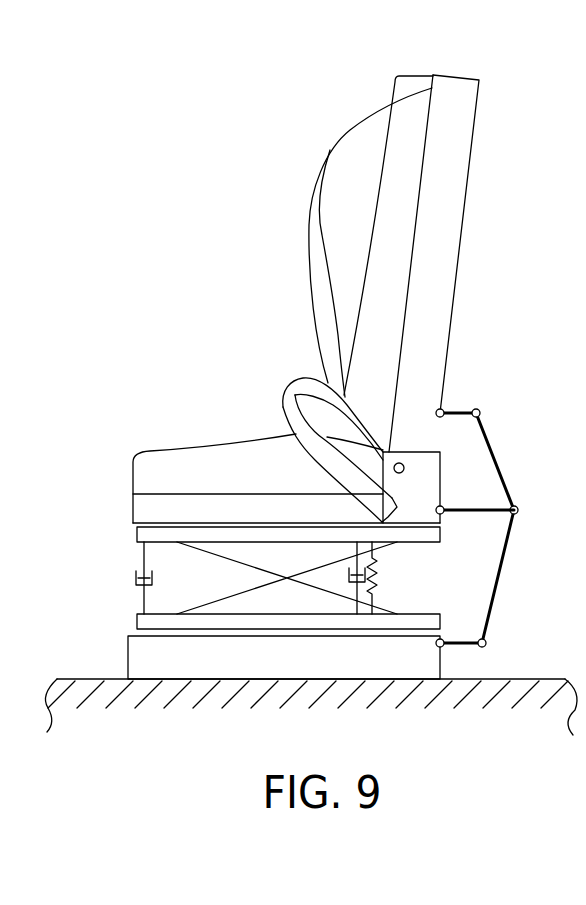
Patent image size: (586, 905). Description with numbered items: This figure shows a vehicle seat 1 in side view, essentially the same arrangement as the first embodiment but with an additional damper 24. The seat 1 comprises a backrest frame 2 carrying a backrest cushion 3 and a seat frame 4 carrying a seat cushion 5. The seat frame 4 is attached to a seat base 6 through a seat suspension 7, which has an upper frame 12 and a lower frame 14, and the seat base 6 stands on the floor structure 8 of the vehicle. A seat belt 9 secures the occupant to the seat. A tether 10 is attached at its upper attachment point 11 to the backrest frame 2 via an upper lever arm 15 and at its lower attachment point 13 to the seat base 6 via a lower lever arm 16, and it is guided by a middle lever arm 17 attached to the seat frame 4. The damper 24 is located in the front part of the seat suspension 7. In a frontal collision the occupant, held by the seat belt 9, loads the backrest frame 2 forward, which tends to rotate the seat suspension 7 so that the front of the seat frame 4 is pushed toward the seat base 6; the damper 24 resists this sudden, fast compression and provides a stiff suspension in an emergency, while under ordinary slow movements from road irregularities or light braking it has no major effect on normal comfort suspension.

The seat 1 is at (222, 325).
The backrest frame 2 is at (440, 256).
The backrest cushion 3 is at (405, 148).
The seat frame 4 is at (138, 510).
The seat cushion 5 is at (210, 462).
The seat base 6 is at (427, 662).
The seat suspension 7 is at (116, 598).
The floor structure 8 is at (293, 736).
The seat belt 9 is at (317, 260).
The tether 10 is at (503, 555).
The upper attachment point 11 is at (480, 410).
The upper frame 12 is at (140, 532).
The lower attachment point 13 is at (486, 641).
The lower frame 14 is at (140, 622).
The upper lever arm 15 is at (462, 410).
The lower lever arm 16 is at (463, 641).
The middle lever arm 17 is at (476, 509).
The damper 24 is at (140, 577).